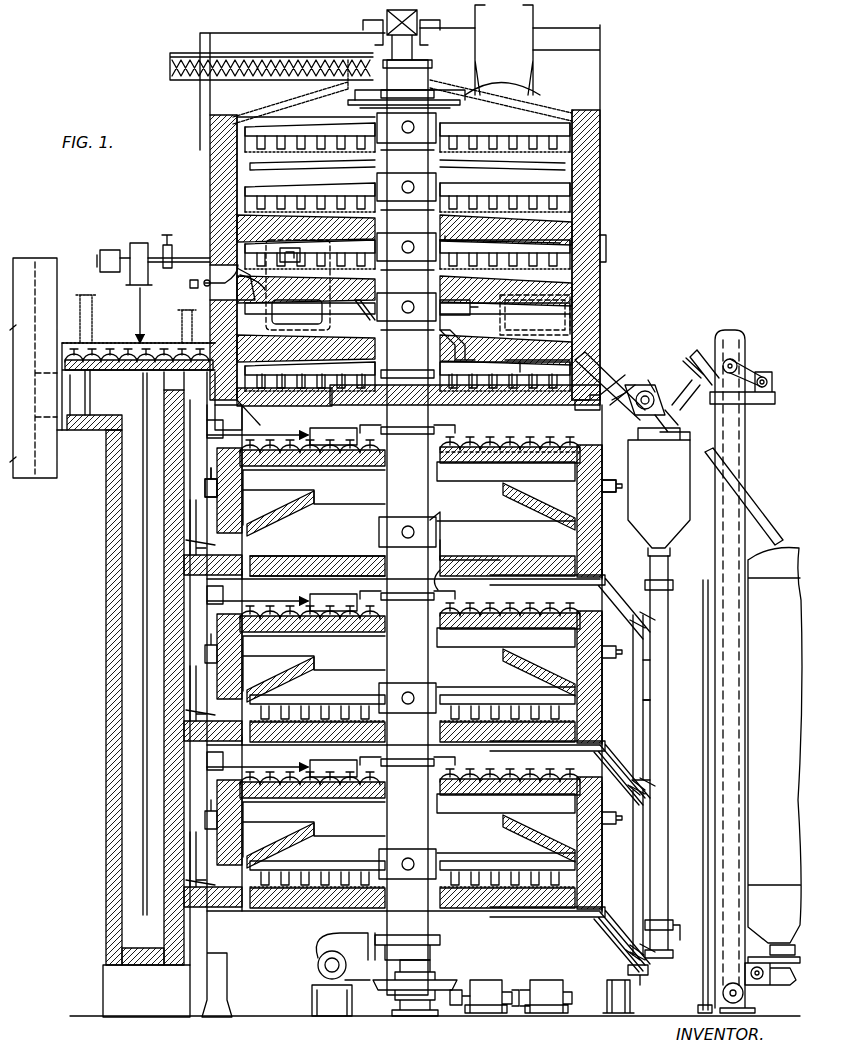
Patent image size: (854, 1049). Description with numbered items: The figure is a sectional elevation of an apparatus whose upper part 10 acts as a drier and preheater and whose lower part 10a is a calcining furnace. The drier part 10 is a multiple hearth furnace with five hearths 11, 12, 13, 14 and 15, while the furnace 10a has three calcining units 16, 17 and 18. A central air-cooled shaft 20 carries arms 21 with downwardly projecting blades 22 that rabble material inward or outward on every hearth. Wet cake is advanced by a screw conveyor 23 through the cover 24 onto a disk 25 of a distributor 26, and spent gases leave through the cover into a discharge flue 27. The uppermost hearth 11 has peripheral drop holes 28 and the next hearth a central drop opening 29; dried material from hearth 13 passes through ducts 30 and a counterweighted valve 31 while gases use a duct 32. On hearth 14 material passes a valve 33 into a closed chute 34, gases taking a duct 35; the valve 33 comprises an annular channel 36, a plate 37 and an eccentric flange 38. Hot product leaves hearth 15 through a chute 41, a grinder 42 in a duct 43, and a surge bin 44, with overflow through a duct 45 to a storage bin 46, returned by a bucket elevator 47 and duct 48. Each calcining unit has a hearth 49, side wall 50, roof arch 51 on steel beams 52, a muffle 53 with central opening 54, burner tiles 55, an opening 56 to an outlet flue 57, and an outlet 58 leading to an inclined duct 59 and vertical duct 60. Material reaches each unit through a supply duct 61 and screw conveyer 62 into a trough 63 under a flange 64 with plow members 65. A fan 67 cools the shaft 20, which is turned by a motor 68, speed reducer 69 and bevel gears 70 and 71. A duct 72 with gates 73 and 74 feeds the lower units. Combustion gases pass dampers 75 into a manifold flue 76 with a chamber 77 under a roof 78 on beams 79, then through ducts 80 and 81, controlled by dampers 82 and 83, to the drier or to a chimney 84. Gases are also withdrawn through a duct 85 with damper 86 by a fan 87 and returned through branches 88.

The drier part 10 is at (602, 262).
The calcining furnace 10a is at (644, 660).
The uppermost hearth 11 is at (590, 173).
The hearth 12 is at (595, 207).
The hearth 13 is at (606, 248).
The hearth 14 is at (560, 325).
The hearth 15 is at (605, 372).
The calcining unit 16 is at (604, 528).
The calcining unit 17 is at (604, 705).
The calcining unit 18 is at (604, 870).
The central air-cooled shaft 20 is at (420, 164).
The arms 21 is at (262, 186).
The blades 22 is at (262, 197).
The screw conveyor 23 is at (268, 58).
The cover 24 is at (300, 100).
The disk 25 is at (348, 106).
The distributor 26 is at (458, 100).
The discharge flue 27 is at (522, 62).
The peripheral drop holes 28 is at (210, 157).
The central drop opening 29 is at (452, 225).
The ducts 30 is at (232, 302).
The material valve 31 is at (212, 272).
The duct 32 is at (290, 312).
The valve 33 is at (368, 305).
The closed chute 34 is at (460, 348).
The duct 35 is at (530, 360).
The annular channel 36 is at (365, 350).
The plate 37 is at (455, 310).
The eccentric circular flange 38 is at (505, 318).
The closed chute 41 is at (605, 392).
The grinder 42 is at (646, 392).
The duct 43 is at (672, 430).
The surge bin 44 is at (668, 522).
The duct 45 is at (750, 512).
The storage bin 46 is at (765, 650).
The bucket elevator 47 is at (740, 441).
The duct 48 is at (690, 362).
The hearth 49 is at (290, 573).
The side wall 50 is at (270, 498).
The roof arch 51 is at (512, 446).
The steel beams 52 is at (480, 445).
The muffle arch 53 is at (525, 490).
The central opening 54 is at (503, 488).
The burner tiles 55 is at (577, 478).
The opening 56 is at (245, 540).
The outlet flue 57 is at (190, 540).
The outlet 58 is at (548, 578).
The inclined duct 59 is at (595, 605).
The vertical duct 60 is at (645, 640).
The supply duct 61 is at (664, 548).
The screw conveyer 62 is at (495, 573).
The trough 63 is at (440, 565).
The flange 64 is at (440, 545).
The plow members 65 is at (450, 550).
The fan 67 is at (318, 965).
The motor 68 is at (545, 980).
The speed reducer 69 is at (488, 980).
The bevel gear 70 is at (456, 1005).
The bevel gear 71 is at (440, 1000).
The duct 72 is at (668, 762).
The gate 73 is at (672, 945).
The gate 74 is at (673, 584).
The dampers 75 is at (200, 540).
The manifold flue 76 is at (104, 833).
The chamber 77 is at (120, 340).
The roof 78 is at (180, 343).
The steel beams 79 is at (94, 343).
The duct 80 is at (237, 412).
The duct 81 is at (80, 430).
The damper 82 is at (185, 365).
The damper 83 is at (90, 400).
The chimney 84 is at (40, 268).
The duct 85 is at (160, 256).
The damper 86 is at (165, 243).
The fan 87 is at (137, 246).
The branches 88 is at (328, 440).